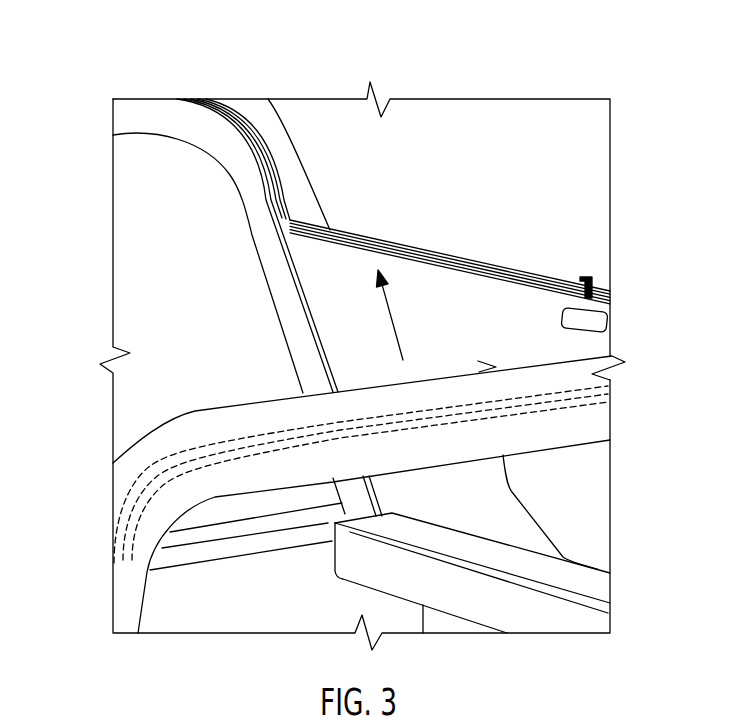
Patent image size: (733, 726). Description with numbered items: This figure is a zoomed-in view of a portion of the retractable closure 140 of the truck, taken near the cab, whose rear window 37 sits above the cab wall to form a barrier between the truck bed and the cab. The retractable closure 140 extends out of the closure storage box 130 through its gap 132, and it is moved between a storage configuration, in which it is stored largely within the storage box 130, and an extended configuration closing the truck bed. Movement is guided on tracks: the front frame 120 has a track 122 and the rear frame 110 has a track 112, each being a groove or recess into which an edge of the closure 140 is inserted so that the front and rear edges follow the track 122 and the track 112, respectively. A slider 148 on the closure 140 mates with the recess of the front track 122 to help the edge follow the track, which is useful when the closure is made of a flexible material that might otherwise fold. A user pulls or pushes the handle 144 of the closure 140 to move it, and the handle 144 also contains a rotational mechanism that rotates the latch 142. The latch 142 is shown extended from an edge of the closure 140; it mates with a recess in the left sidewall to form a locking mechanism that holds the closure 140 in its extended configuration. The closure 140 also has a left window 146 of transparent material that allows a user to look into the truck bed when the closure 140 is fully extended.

The rear window 37 is at (143, 183).
The rear frame 110 is at (187, 413).
The track 112 is at (127, 500).
The front frame 120 is at (285, 118).
The track 122 is at (210, 103).
The closure storage box 130 is at (572, 622).
The gap 132 is at (595, 570).
The retractable closure 140 is at (337, 263).
The latch 142 is at (590, 277).
The handle 144 is at (568, 308).
The left window 146 is at (602, 483).
The slider 148 is at (284, 219).